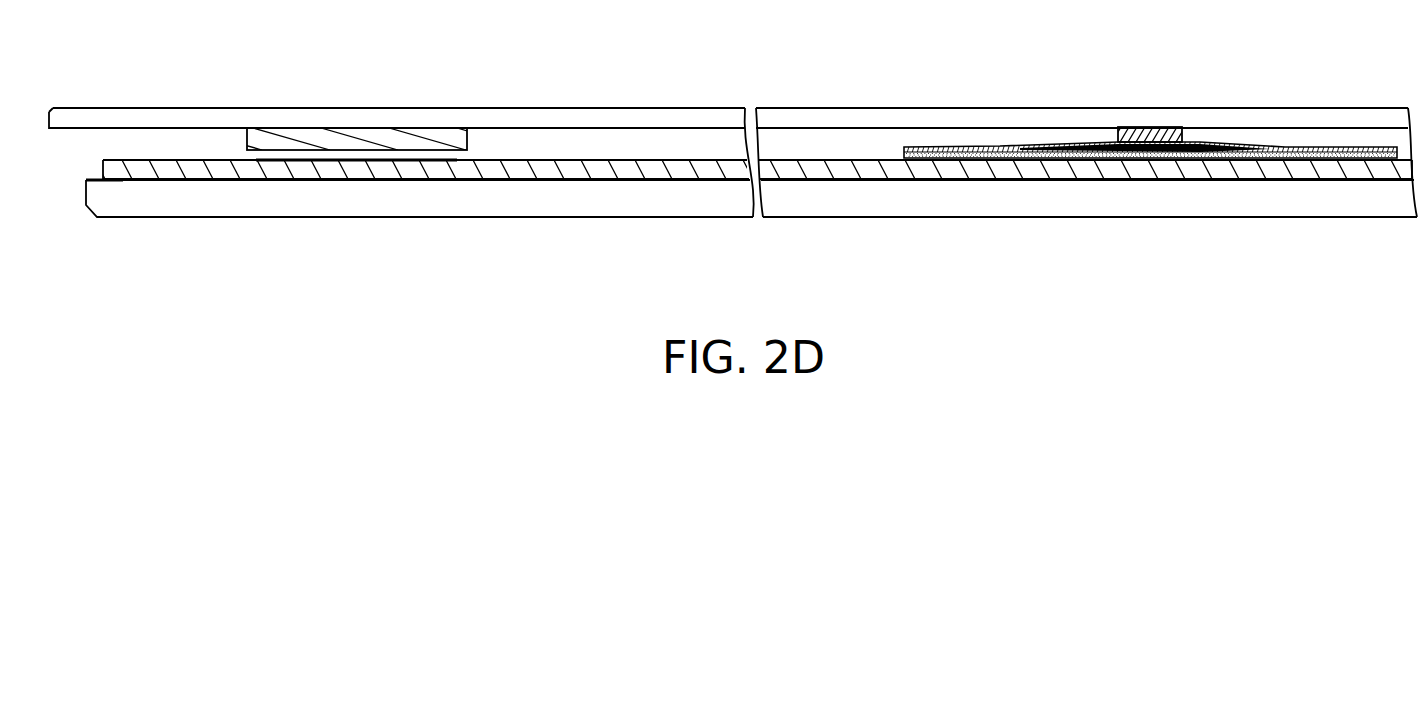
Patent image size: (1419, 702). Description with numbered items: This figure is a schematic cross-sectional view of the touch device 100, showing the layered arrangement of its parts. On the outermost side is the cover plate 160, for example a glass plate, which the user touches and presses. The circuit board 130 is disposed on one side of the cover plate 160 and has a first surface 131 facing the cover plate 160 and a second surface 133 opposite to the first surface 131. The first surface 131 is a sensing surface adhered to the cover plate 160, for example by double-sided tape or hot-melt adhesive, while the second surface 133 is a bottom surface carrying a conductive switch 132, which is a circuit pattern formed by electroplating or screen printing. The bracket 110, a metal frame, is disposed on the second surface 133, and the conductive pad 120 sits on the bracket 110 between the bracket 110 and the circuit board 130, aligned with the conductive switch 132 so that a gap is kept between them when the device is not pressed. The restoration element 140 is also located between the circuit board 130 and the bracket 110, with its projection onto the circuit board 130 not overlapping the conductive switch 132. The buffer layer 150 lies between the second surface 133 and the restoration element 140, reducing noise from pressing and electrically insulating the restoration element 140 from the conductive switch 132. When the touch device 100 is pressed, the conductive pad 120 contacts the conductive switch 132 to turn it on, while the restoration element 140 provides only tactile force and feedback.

The touch device 100 is at (1297, 275).
The bracket 110 is at (1292, 118).
The conductive pad 120 is at (366, 133).
The circuit board 130 is at (715, 170).
The first surface 131 is at (532, 187).
The conductive switch 132 is at (375, 162).
The second surface 133 is at (586, 152).
The restoration element 140 is at (1163, 127).
The buffer layer 150 is at (942, 158).
The cover plate 160 is at (635, 197).